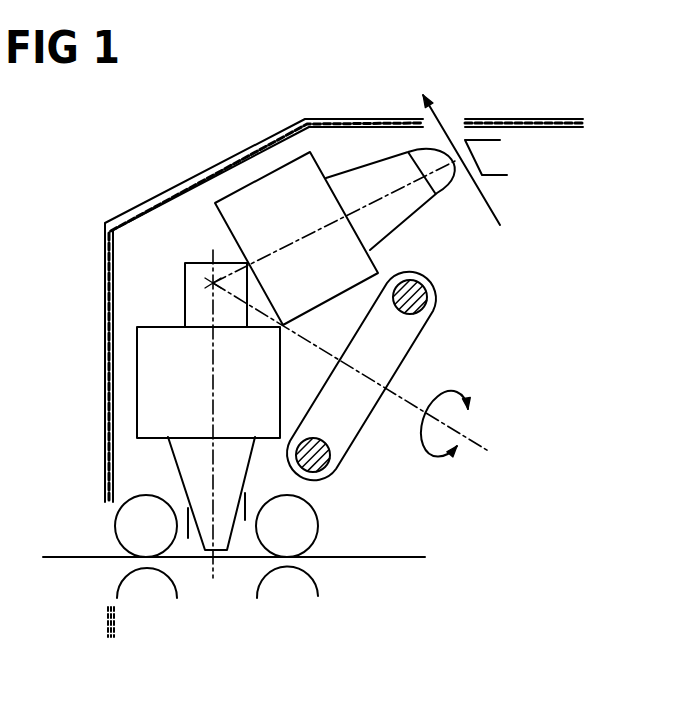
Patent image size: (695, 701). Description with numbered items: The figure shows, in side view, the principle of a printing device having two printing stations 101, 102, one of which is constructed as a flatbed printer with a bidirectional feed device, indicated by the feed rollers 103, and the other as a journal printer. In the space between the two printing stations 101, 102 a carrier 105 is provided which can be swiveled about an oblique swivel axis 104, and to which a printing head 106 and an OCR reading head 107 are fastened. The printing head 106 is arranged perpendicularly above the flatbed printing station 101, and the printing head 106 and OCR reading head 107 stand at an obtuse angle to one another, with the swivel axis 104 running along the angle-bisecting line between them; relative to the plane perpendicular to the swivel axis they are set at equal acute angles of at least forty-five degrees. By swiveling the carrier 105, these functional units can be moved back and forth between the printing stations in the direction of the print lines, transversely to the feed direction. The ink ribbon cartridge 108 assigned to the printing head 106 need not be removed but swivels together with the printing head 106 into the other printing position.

The flatbed printing station 101 is at (223, 566).
The journal printing station 102 is at (455, 122).
The feed rollers 103 is at (117, 528).
The swivel axis 104 is at (433, 394).
The carrier 105 is at (428, 318).
The printing head 106 is at (146, 330).
The OCR reading head 107 is at (253, 190).
The ink ribbon cartridge 108 is at (186, 261).